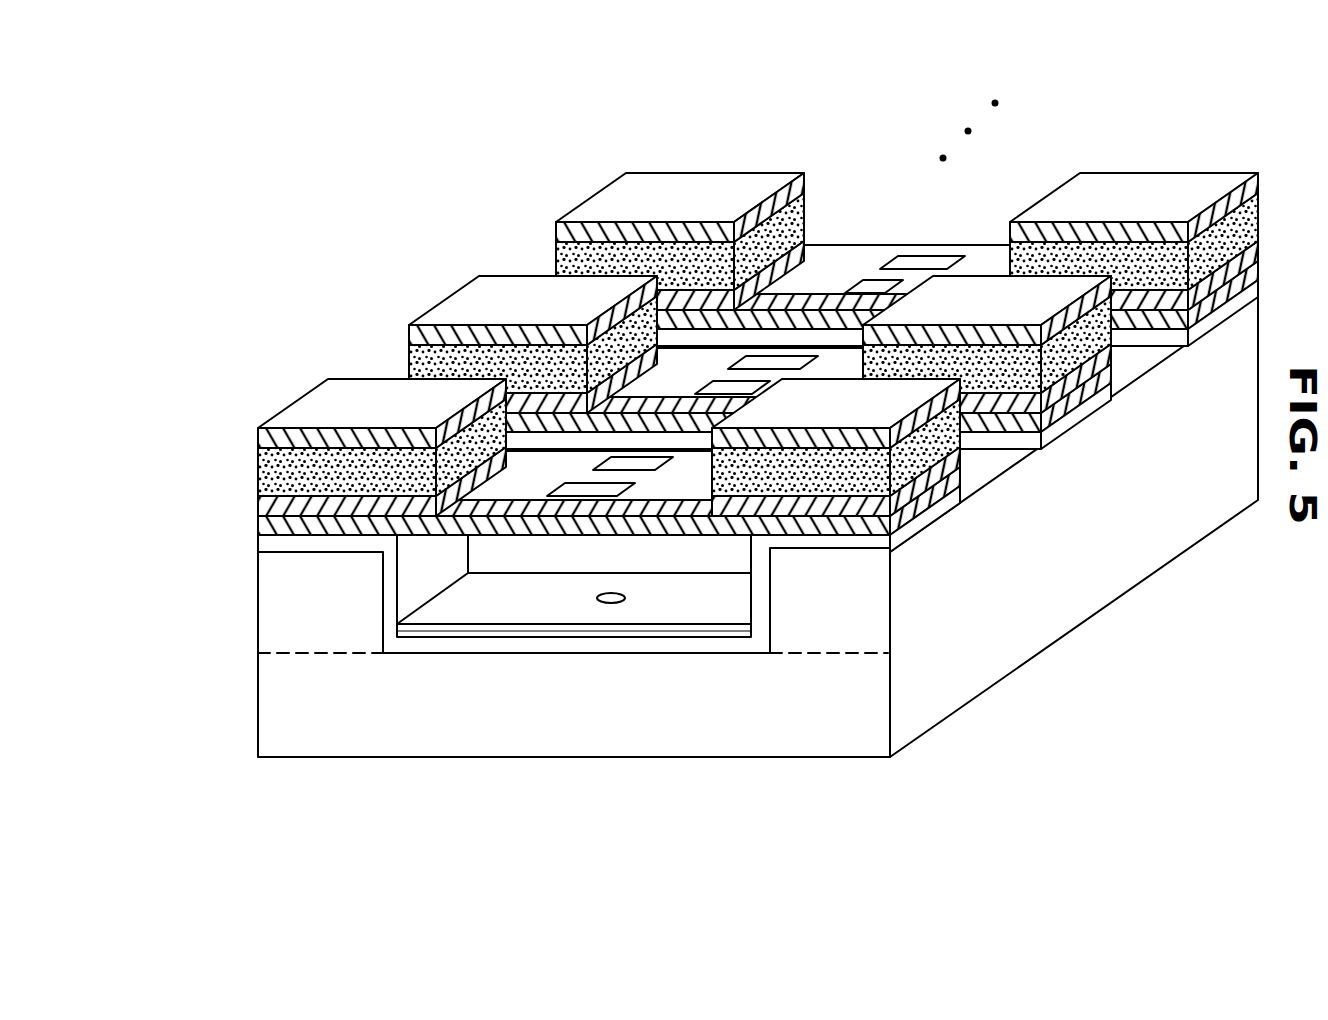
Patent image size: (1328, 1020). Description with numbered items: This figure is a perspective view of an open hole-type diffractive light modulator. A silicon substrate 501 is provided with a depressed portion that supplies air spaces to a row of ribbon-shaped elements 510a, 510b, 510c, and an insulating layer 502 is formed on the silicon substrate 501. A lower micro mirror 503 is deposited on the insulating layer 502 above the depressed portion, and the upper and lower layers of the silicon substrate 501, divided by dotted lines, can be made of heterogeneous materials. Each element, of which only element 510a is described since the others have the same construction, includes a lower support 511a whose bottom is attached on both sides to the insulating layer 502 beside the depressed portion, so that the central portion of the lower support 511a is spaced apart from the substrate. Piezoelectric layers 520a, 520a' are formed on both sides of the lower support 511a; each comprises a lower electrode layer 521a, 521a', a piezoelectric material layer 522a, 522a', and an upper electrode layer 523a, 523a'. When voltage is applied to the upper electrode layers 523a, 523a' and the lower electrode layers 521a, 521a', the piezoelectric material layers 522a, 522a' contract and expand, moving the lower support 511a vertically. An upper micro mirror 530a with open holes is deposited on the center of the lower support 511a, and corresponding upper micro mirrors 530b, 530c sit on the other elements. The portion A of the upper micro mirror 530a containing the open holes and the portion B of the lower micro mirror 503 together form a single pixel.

The silicon substrate 501 is at (758, 565).
The insulating layer 502 is at (574, 685).
The lower micro mirror 503 is at (462, 630).
The element 510a is at (659, 480).
The element 510b is at (727, 313).
The element 510c is at (874, 221).
The lower support 511a is at (258, 527).
The piezoelectric layer 520a is at (318, 384).
The lower electrode layer 521a is at (332, 427).
The piezoelectric material layer 522a is at (344, 397).
The upper electrode layer 523a is at (361, 359).
The piezoelectric layer 520a' is at (972, 568).
The lower electrode layer 521a' is at (911, 595).
The piezoelectric material layer 522a' is at (937, 550).
The upper electrode layer 523a' is at (955, 521).
The upper micro mirror 530a is at (440, 433).
The upper micro mirror 530b is at (647, 365).
The upper micro mirror 530c is at (768, 238).
The portion of the upper micro mirror A is at (590, 468).
The portion of the lower micro mirror B is at (603, 603).